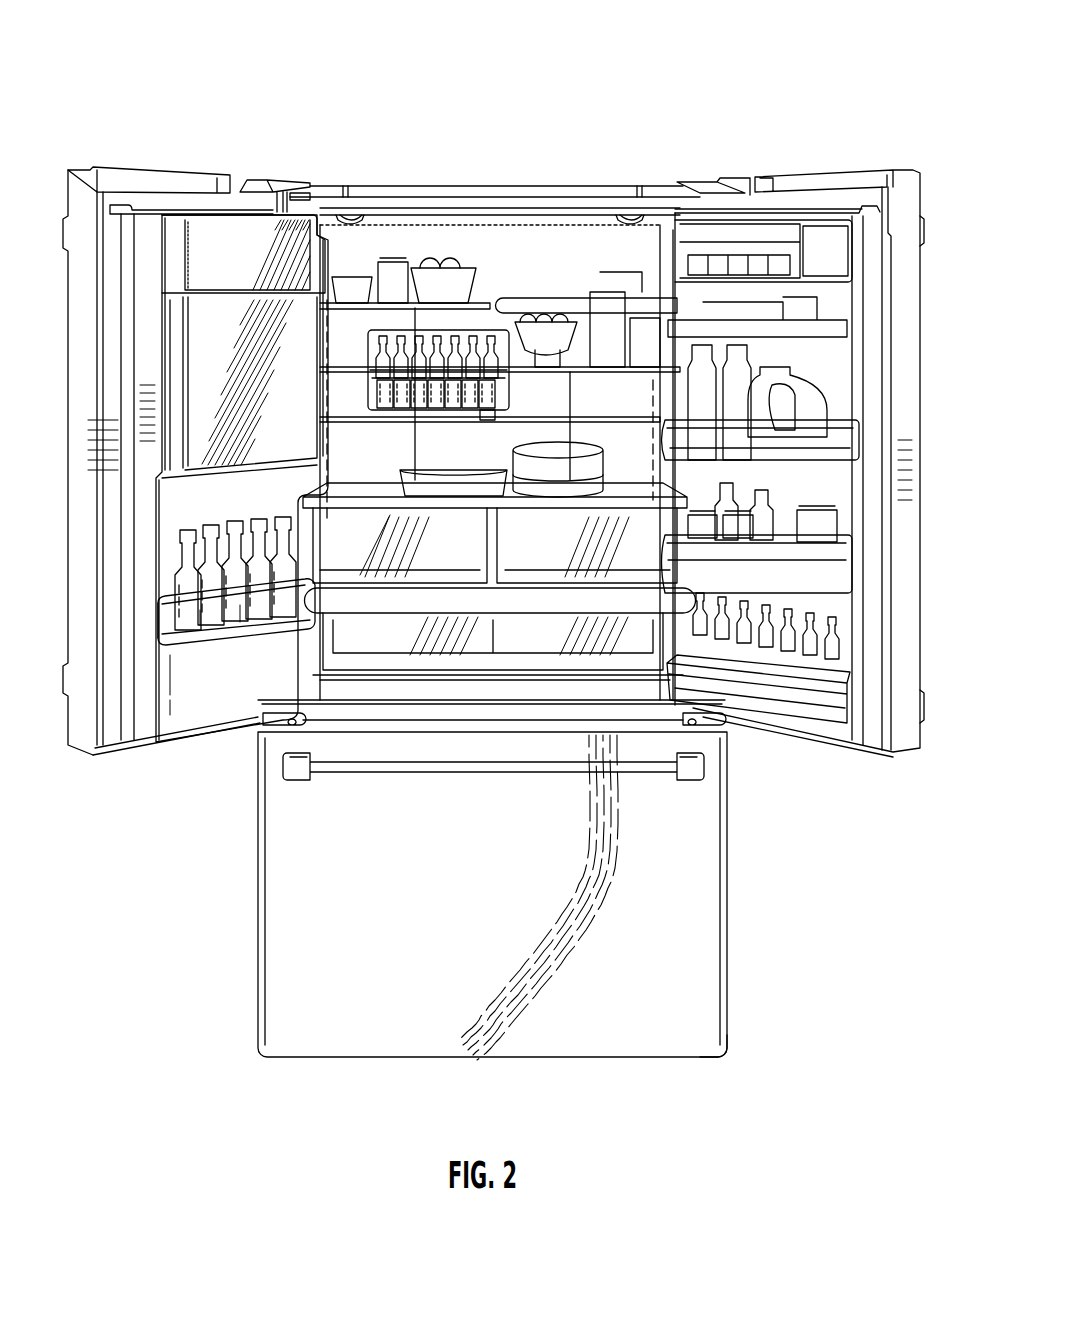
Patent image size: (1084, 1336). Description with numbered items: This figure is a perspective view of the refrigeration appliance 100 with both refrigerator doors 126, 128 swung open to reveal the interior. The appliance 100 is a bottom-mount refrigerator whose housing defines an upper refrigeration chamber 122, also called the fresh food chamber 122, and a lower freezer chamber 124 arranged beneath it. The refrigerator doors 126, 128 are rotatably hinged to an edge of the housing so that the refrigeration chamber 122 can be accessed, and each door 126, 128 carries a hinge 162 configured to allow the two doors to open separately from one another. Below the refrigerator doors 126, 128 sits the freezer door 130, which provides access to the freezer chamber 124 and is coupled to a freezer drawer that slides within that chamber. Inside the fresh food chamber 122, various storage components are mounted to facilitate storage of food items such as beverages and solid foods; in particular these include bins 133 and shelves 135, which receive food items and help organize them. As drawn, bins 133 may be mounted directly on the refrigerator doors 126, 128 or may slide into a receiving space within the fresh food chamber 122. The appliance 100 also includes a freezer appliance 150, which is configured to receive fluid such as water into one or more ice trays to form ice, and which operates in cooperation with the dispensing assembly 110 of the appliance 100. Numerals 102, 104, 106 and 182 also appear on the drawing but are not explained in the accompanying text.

The appliance 100 is at (861, 104).
The cabinet top trim 102 is at (657, 192).
The cabinet 104 is at (438, 186).
The freezer drawer door 106 is at (358, 1061).
The dispensing assembly 110 is at (720, 1060).
The refrigeration chamber 122 is at (600, 257).
The freezer chamber 124 is at (363, 874).
The refrigerator door 126 is at (82, 738).
The refrigerator door 128 is at (905, 556).
The freezer door 130 is at (519, 921).
The bins 133 is at (554, 553).
The shelves 135 is at (350, 297).
The freezer appliance 150 is at (227, 280).
The hinge 162 is at (260, 723).
The container 182 is at (812, 409).